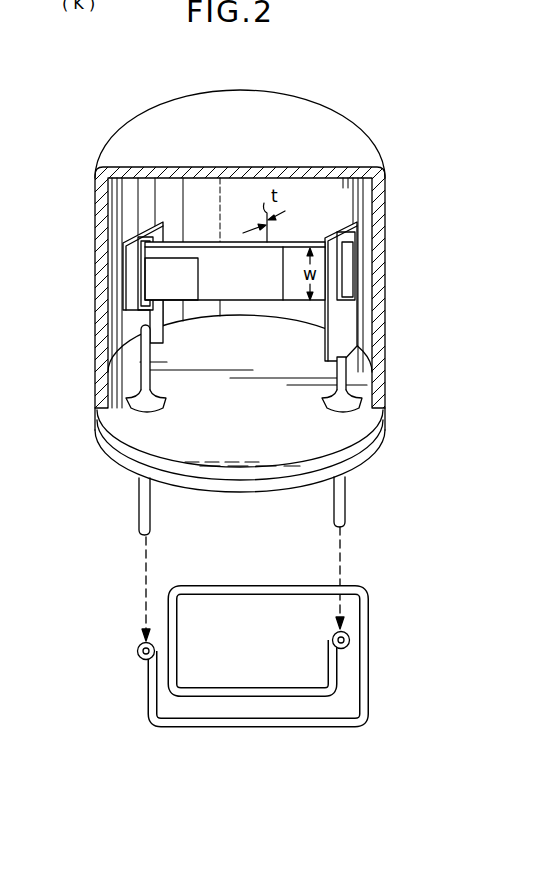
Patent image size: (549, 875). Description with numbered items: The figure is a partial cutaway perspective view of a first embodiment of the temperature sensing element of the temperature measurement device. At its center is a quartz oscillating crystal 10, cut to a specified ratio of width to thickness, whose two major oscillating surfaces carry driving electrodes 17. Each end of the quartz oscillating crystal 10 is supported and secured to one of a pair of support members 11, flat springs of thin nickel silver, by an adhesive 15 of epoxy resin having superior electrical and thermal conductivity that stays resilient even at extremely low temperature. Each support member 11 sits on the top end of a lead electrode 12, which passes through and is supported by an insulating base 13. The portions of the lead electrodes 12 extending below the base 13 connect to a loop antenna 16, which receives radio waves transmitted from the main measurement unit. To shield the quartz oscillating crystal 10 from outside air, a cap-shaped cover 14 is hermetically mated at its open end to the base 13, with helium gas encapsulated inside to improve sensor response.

The quartz oscillating crystal 10 is at (293, 296).
The support members 11 is at (133, 256).
The lead electrodes 12 is at (145, 365).
The insulating base 13 is at (113, 440).
The cap-shaped cover 14 is at (260, 117).
The adhesive 15 is at (142, 282).
The loop antenna 16 is at (370, 650).
The driving electrodes 17 is at (273, 250).